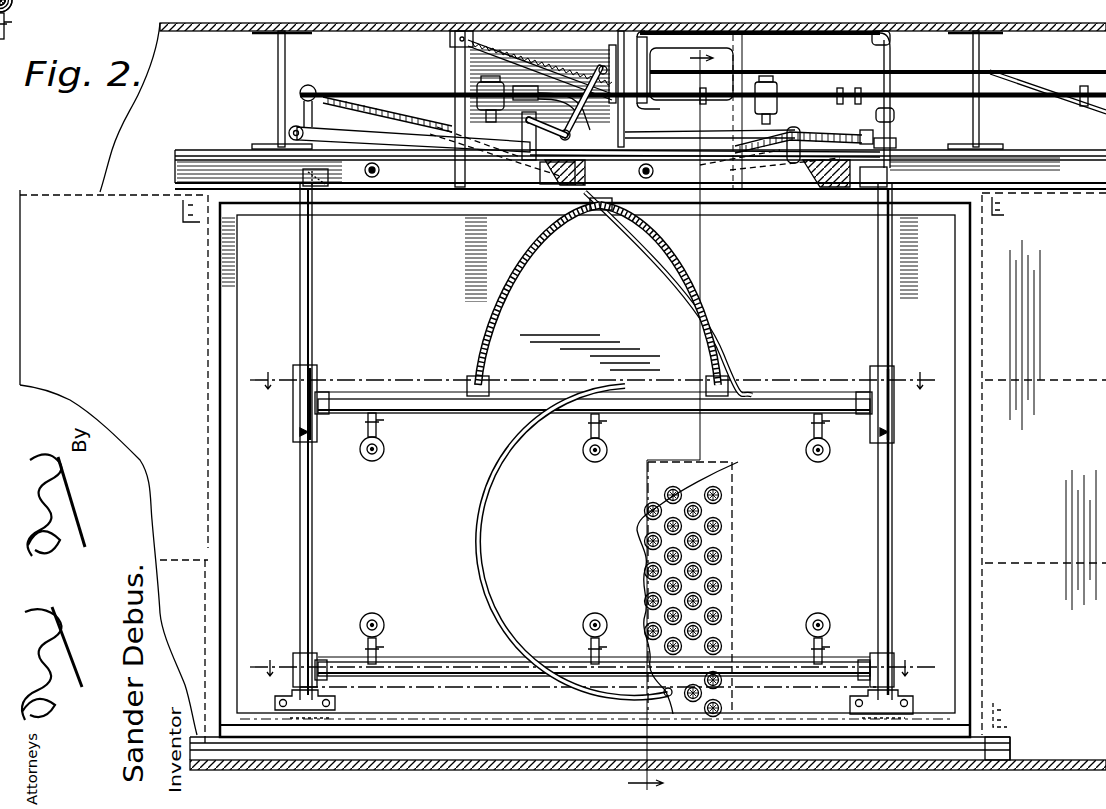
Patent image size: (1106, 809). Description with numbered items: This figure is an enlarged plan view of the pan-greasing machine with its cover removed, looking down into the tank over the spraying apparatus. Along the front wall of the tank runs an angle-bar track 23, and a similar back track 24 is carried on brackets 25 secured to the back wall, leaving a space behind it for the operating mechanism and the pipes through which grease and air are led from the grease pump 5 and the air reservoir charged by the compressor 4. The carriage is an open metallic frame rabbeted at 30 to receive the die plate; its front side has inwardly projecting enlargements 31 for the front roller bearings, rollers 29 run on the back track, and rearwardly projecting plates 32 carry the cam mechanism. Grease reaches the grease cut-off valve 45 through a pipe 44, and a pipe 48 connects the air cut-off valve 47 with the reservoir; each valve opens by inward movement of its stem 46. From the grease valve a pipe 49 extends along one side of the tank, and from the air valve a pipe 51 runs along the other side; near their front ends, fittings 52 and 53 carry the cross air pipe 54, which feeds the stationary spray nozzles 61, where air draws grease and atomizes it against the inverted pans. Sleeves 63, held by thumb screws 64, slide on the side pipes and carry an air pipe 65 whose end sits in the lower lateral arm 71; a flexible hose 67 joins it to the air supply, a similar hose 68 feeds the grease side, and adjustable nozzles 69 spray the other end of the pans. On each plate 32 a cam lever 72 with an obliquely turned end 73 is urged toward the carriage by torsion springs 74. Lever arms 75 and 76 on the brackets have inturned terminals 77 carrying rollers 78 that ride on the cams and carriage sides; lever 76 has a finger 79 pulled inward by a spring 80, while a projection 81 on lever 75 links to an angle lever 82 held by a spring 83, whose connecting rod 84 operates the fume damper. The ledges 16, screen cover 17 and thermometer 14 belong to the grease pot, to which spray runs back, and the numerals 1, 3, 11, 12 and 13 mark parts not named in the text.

The floor 1 is at (864, 770).
The section line 3- 3 is at (670, 428).
The air compressor 4 is at (590, 384).
The grease pump 5 is at (590, 672).
The tank 11 is at (588, 464).
The tank chamber 12 is at (590, 449).
The curved distributing pipe 13 is at (506, 518).
The thermometer 14 is at (742, 504).
The ledges 16 is at (742, 448).
The cover 17 is at (740, 478).
The track 23 is at (1012, 742).
The track 24 is at (192, 176).
The brackets 25 is at (275, 84).
The rollers 29 is at (308, 187).
The rabbet 30 is at (232, 640).
The enlargements 31 is at (352, 703).
The extensions or plates 32 is at (430, 192).
The pipe 44 is at (1018, 100).
The grease cut-off valve 45 is at (768, 82).
The stem 46 is at (462, 99).
The air cut-off valve 47 is at (478, 90).
The pipe 48 is at (632, 128).
The pipe 49 is at (893, 62).
The pipe 51 is at (314, 576).
The fitting 52 is at (894, 662).
The fitting 53 is at (318, 654).
The cross air pipe 54 is at (764, 664).
The spray nozzles 61 is at (386, 618).
The sleeves 63 is at (318, 374).
The thumb screws 64 is at (300, 432).
The air pipe 65 is at (540, 398).
The flexible hose 67 is at (652, 278).
The flexible hose 68 is at (516, 290).
The nozzles 69 is at (384, 458).
The lower lateral arm 71 is at (525, 162).
The cam lever 72 is at (772, 176).
The obliquely turned end 73 is at (552, 188).
The torsion springs 74 is at (372, 180).
The valve-controlling lever arm 75 is at (334, 128).
The valve-controlling lever arm 76 is at (822, 136).
The inturned terminal 77 is at (895, 142).
The roller 78 is at (858, 170).
The finger or extension 79 is at (655, 232).
The spring 80 is at (650, 82).
The projection 81 is at (400, 96).
The angle lever 82 is at (598, 212).
The spring 83 is at (468, 52).
The connecting rod 84 is at (1038, 86).